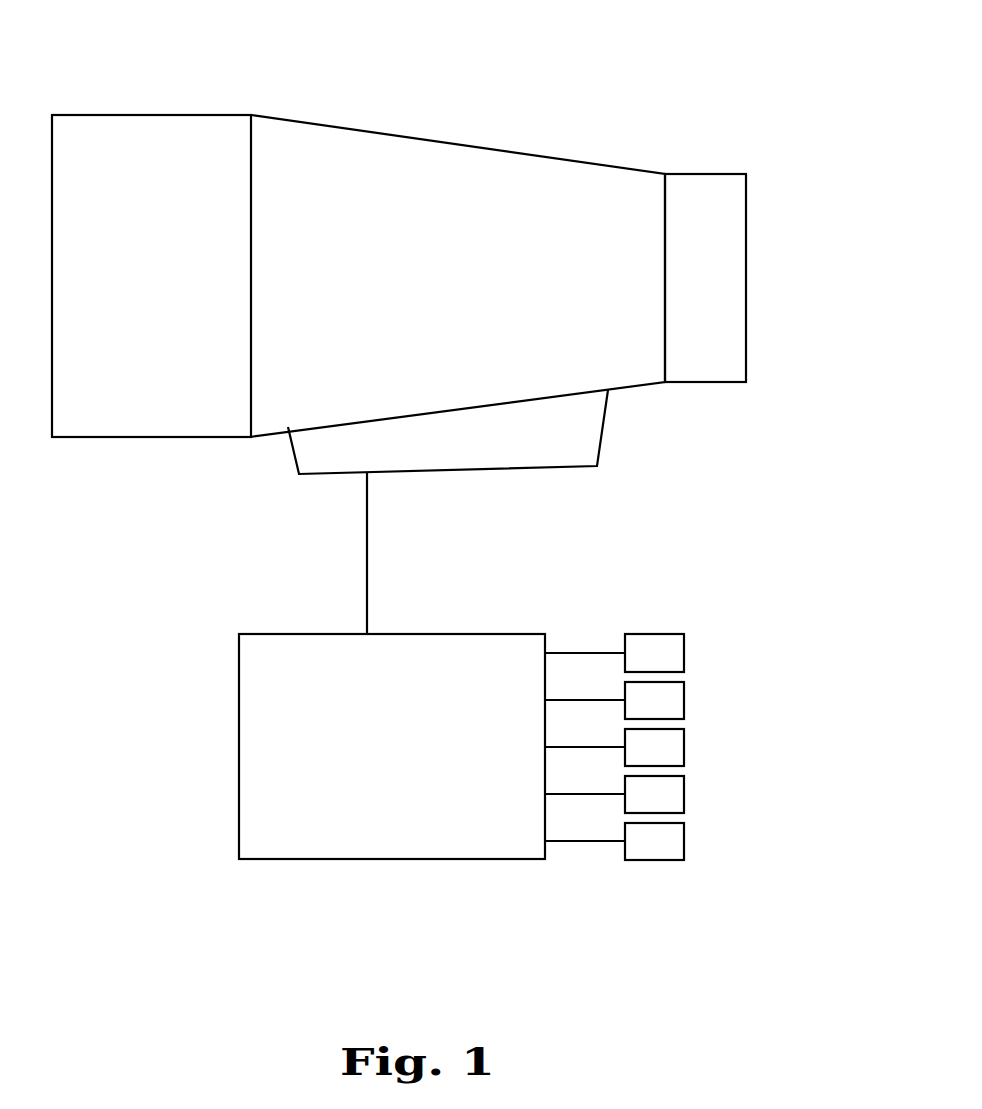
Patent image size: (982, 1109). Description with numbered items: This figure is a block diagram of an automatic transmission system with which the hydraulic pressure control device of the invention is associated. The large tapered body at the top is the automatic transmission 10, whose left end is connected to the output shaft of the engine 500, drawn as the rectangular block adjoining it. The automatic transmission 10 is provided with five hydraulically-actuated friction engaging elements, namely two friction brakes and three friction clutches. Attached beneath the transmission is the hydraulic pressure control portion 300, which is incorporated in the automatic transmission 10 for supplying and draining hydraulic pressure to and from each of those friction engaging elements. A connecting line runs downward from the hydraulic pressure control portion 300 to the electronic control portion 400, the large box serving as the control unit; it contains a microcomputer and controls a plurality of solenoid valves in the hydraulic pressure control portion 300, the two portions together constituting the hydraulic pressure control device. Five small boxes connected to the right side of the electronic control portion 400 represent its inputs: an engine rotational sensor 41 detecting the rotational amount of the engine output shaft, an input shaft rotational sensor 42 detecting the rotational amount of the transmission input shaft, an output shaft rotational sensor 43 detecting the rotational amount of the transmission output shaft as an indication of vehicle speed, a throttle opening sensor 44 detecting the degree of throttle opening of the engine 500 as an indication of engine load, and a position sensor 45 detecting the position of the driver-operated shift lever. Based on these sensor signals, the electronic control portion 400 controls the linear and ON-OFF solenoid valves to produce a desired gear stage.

The automatic transmission 10 is at (418, 155).
The engine 500 is at (132, 135).
The hydraulic pressure control portion 300 is at (567, 448).
The electronic control portion 400 is at (278, 682).
The engine rotational sensor 41 is at (673, 645).
The input shaft rotational sensor 42 is at (673, 693).
The output shaft rotational sensor 43 is at (673, 741).
The throttle opening sensor 44 is at (673, 788).
The position sensor 45 is at (673, 835).